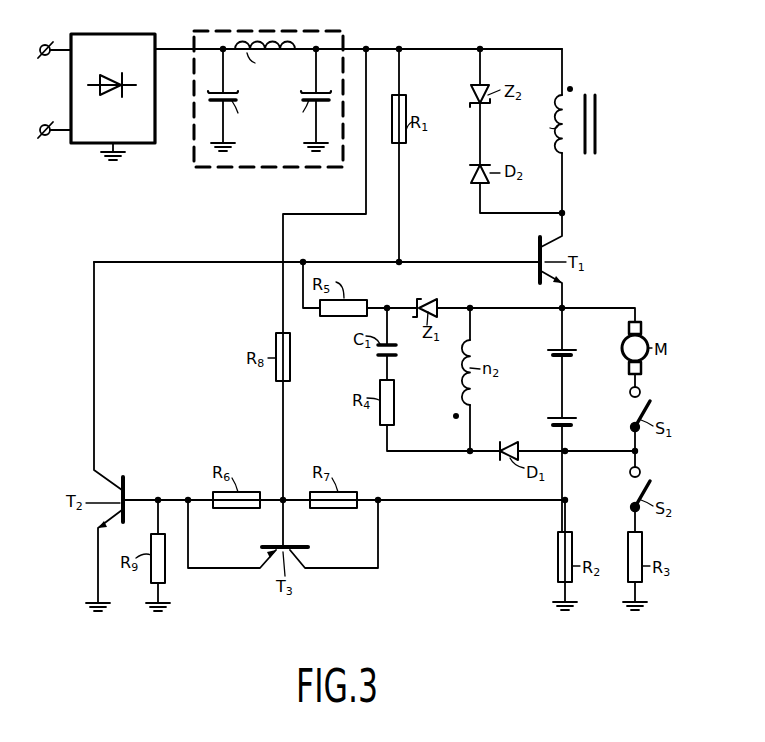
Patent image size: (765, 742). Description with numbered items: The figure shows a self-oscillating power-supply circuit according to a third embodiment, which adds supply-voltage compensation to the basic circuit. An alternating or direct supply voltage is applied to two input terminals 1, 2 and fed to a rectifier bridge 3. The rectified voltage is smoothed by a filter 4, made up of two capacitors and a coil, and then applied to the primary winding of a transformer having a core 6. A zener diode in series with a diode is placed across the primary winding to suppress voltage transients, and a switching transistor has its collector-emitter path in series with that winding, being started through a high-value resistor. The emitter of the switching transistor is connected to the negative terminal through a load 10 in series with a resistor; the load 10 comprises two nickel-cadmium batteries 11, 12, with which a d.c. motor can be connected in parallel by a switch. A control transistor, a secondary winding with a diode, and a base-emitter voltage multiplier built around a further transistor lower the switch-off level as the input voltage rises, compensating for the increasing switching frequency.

The input terminal 1 is at (45, 44).
The input terminal 2 is at (45, 124).
The rectifier bridge 3 is at (104, 34).
The filter 4 is at (258, 24).
The core 6 is at (592, 86).
The load 10 is at (577, 381).
The nickel-cadmium battery 11 is at (568, 350).
The nickel-cadmium battery 12 is at (572, 427).